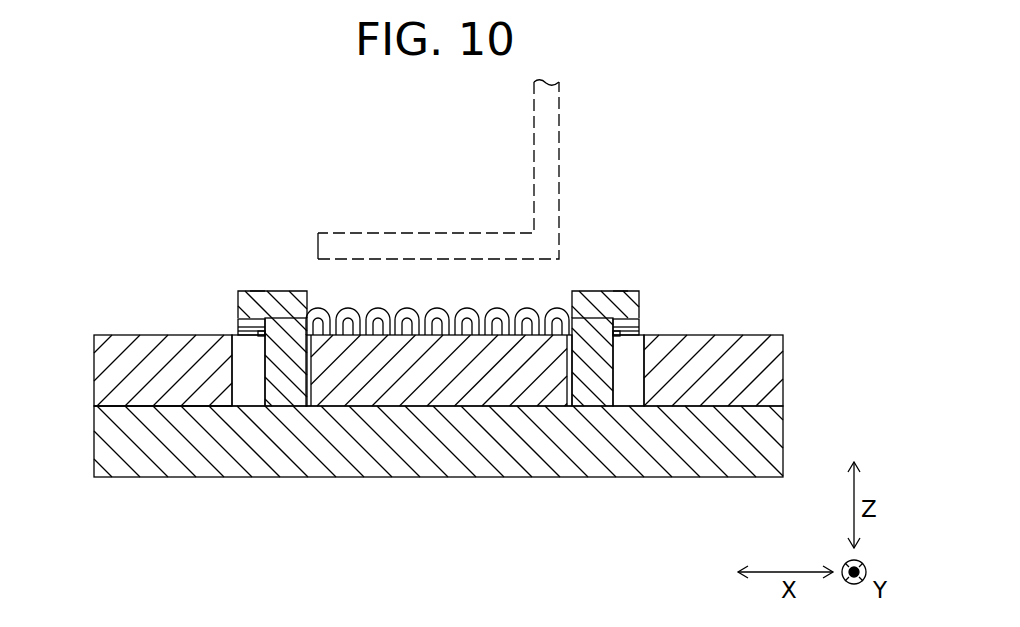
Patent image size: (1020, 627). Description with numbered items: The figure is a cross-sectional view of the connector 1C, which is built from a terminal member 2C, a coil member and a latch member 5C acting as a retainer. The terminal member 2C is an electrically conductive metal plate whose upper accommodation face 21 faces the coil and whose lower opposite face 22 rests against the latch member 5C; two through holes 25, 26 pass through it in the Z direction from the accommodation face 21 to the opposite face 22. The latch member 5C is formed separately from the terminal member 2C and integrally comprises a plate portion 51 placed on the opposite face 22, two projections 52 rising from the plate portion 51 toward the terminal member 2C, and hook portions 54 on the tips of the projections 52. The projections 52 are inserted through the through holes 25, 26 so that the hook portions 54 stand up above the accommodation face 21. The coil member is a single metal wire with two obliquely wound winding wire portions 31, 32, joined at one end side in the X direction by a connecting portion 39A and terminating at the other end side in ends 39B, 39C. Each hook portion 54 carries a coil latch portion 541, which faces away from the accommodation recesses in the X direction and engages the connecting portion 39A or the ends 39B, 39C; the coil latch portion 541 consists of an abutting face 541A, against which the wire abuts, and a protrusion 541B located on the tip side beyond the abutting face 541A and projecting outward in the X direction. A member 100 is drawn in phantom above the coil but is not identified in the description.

The external member (L-shaped, phantom) 100 is at (562, 94).
The connector 1C is at (696, 163).
The latch member 5C is at (468, 467).
The plate portion 51 is at (766, 438).
The accommodation face 21 is at (112, 334).
The opposite face 22 is at (164, 407).
The terminal member 2C is at (766, 383).
The through hole 25 is at (247, 377).
The through hole 26 is at (643, 377).
The projection 52 is at (279, 366).
The hook portion 54 is at (287, 291).
The coil latch portion 541 is at (436, 293).
The abutting face 541A is at (238, 318).
The protrusion 541B is at (257, 291).
The connecting portion 39A is at (256, 332).
The end 39B is at (702, 321).
The end 39C is at (622, 331).
The winding wire portion 32 is at (475, 260).
The winding wire portion 31 is at (504, 304).